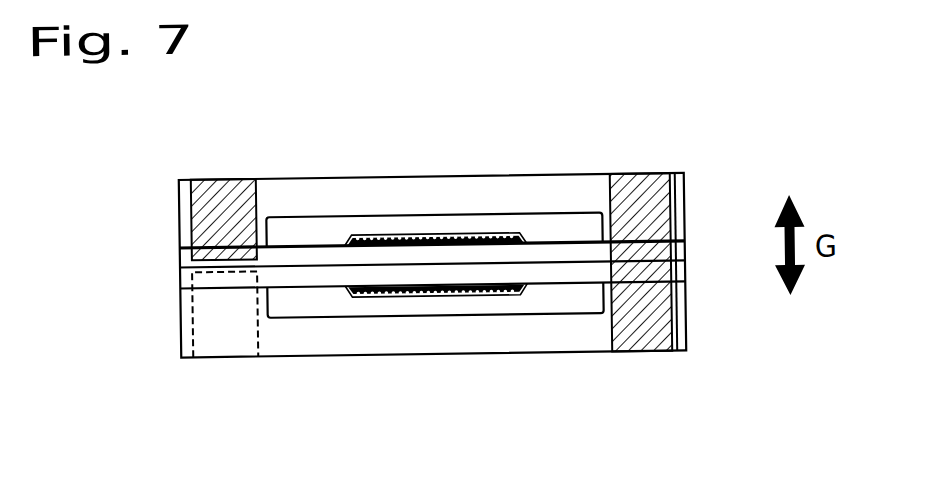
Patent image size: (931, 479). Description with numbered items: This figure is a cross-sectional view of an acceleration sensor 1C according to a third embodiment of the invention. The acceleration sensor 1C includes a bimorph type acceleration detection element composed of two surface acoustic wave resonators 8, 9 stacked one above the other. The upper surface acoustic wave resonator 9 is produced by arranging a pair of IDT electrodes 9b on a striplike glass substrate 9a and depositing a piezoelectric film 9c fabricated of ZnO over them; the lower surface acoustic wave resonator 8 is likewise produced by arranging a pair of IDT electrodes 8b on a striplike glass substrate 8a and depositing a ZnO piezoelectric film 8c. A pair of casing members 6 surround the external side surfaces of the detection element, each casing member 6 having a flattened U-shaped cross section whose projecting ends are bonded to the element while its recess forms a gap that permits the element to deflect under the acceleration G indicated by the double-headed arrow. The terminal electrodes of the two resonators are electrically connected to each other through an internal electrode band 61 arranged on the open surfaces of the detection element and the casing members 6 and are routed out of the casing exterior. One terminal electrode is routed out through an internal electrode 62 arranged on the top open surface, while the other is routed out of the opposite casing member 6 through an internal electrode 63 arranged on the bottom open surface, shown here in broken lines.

The acceleration sensor 1C is at (490, 136).
The casing member 6 is at (310, 185).
The internal electrode band 61 is at (638, 177).
The internal electrode 62 is at (215, 177).
The internal electrode 63 is at (182, 319).
The surface acoustic wave resonator 8 is at (567, 299).
The glass substrate 8a is at (536, 276).
The IDT electrode 8b is at (373, 295).
The piezoelectric film 8c is at (423, 296).
The surface acoustic wave resonator 9 is at (572, 231).
The glass substrate 9a is at (533, 251).
The IDT electrode 9b is at (367, 234).
The piezoelectric film 9c is at (438, 234).